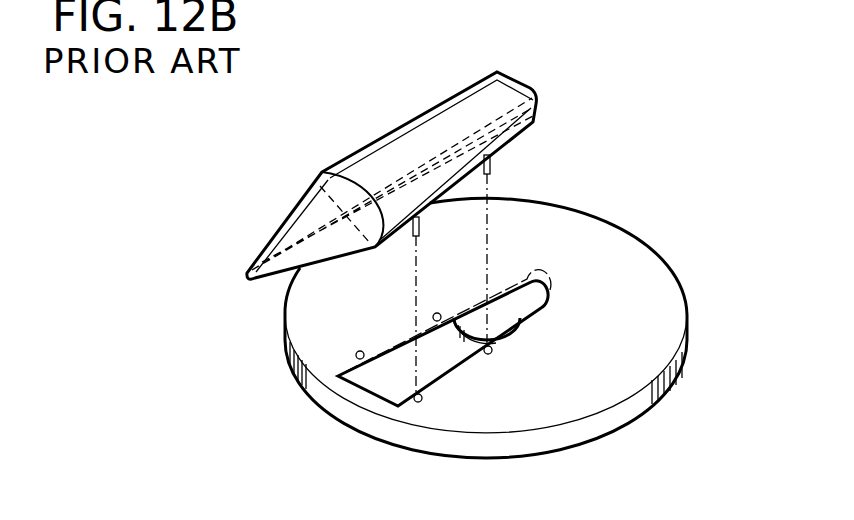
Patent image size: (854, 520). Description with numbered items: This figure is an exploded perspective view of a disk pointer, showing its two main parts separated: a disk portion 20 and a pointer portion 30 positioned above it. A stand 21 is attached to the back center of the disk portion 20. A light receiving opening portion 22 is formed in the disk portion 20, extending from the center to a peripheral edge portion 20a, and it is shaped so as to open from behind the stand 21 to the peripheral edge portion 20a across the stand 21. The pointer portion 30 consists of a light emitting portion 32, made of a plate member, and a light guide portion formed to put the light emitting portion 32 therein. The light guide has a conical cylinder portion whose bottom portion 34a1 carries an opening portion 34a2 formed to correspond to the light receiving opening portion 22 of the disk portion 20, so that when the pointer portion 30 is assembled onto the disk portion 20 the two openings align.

The disk portion 20 is at (660, 343).
The peripheral edge portion 20a is at (443, 437).
The stand 21 is at (508, 320).
The light receiving opening portion 22 is at (393, 362).
The pointer portion 30 is at (448, 175).
The light emitting portion 32 is at (447, 123).
The bottom portion 34a1 is at (537, 128).
The opening portion 34a2 is at (493, 157).